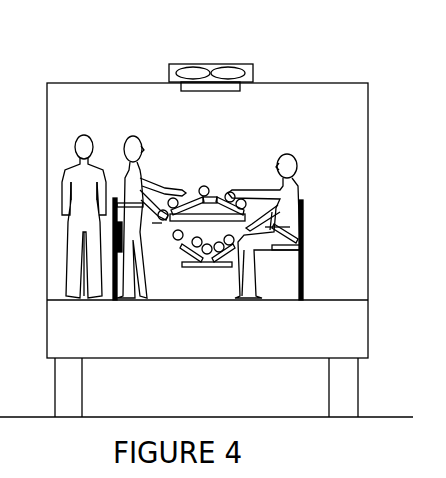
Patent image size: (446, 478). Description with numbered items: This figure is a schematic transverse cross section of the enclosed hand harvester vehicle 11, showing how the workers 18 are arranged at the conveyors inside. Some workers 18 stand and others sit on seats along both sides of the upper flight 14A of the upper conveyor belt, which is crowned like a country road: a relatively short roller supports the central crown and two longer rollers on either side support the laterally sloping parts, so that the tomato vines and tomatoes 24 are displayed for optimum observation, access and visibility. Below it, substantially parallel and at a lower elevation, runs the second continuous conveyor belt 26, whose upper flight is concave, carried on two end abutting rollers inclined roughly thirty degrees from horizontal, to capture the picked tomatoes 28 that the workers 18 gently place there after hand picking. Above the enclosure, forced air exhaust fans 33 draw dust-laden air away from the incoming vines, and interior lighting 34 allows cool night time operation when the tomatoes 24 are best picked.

The hand harvester vehicle 11 is at (369, 216).
The upper flight of conveyor belt 14A is at (268, 173).
The workers 18 is at (300, 163).
The tomatoes 24 is at (203, 186).
The second continuous conveyor belt 26 is at (233, 265).
The picked tomatoes 28 is at (233, 250).
The forced air exhaust fans 33 is at (196, 64).
The lighting 34 is at (240, 90).